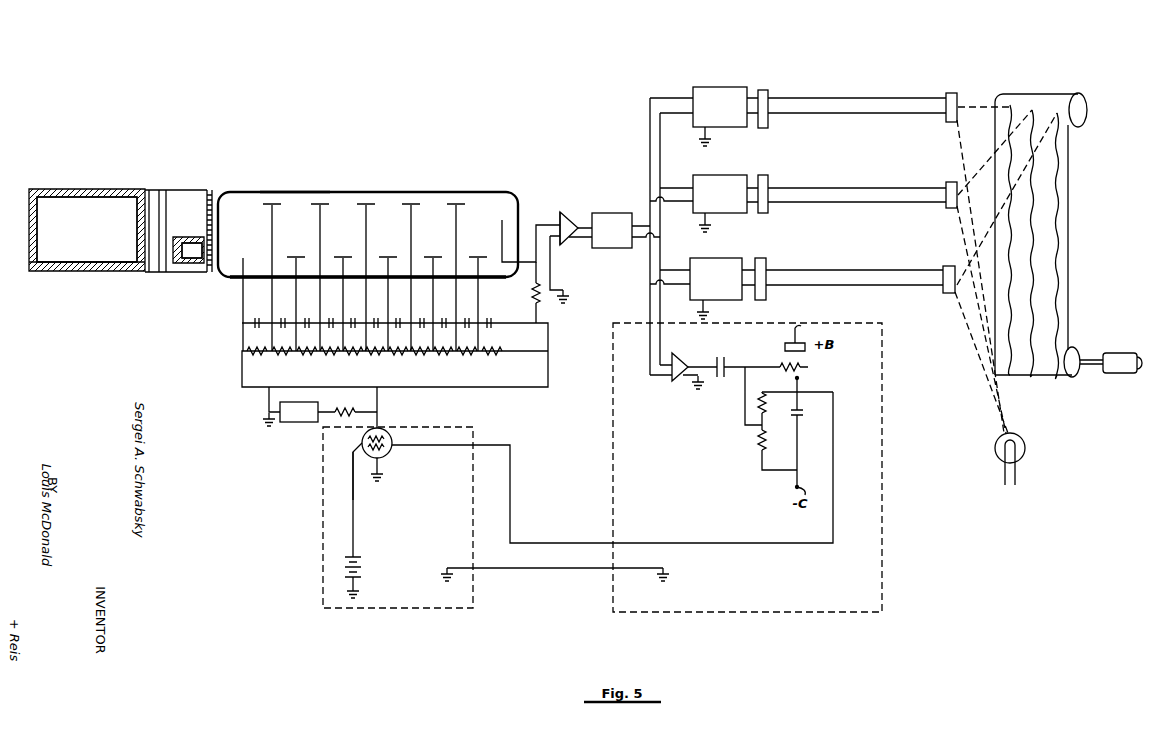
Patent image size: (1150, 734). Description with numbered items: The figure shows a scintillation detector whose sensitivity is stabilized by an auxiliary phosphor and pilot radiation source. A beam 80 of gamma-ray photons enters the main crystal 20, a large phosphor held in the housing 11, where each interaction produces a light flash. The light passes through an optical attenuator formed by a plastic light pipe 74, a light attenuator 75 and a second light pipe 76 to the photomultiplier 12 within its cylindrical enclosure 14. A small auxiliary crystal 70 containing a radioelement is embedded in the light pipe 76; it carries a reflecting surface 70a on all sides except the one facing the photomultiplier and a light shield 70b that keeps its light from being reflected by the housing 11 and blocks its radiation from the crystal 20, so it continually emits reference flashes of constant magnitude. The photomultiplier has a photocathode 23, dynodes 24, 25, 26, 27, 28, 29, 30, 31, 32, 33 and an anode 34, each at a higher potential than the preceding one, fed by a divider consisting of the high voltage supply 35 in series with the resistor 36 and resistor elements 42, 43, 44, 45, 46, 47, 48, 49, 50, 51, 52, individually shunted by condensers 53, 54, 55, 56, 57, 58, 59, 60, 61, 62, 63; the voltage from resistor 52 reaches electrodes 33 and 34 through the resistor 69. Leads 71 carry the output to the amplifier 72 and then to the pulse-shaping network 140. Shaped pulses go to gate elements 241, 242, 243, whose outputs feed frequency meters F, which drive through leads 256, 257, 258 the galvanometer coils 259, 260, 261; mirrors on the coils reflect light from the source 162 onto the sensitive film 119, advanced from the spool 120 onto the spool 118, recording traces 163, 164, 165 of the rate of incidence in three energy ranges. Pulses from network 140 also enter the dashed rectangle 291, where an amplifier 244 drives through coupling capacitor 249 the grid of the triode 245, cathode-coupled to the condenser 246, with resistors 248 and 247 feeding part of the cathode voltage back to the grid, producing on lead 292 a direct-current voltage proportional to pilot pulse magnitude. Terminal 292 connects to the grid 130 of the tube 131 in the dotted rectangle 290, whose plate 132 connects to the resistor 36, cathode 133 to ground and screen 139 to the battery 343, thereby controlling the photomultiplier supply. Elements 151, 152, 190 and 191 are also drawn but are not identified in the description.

The beam of incoming particles 80 is at (52, 250).
The crystal 20 is at (87, 229).
The housing 11 is at (117, 265).
The plastic light pipe 74 is at (152, 190).
The light attenuator 75 is at (163, 212).
The light pipe 76 is at (188, 210).
The auxiliary crystal 70 is at (198, 242).
The reflecting surface 70a is at (200, 260).
The light shield 70b is at (162, 262).
The cylindrical enclosure 14 is at (266, 174).
The photomultiplier 12 is at (295, 203).
The photosensitive cathode 23 is at (222, 238).
The dynode 24 is at (272, 270).
The dynode 25 is at (296, 296).
The dynode 26 is at (320, 270).
The dynode 27 is at (343, 296).
The dynode 28 is at (366, 270).
The dynode 29 is at (388, 296).
The dynode 30 is at (411, 270).
The dynode 31 is at (433, 296).
The dynode 32 is at (456, 270).
The dynode 33 is at (478, 296).
The anode 34 is at (502, 220).
The resistor element 42 is at (256, 360).
The resistor element 43 is at (282, 360).
The resistor element 44 is at (307, 360).
The resistor element 45 is at (330, 360).
The resistor element 46 is at (353, 360).
The resistor element 47 is at (375, 360).
The resistor element 48 is at (398, 360).
The resistor element 49 is at (420, 360).
The resistor element 50 is at (443, 360).
The resistor element 51 is at (467, 360).
The resistor element 52 is at (491, 360).
The condenser 53 is at (257, 315).
The condenser 54 is at (283, 315).
The condenser 55 is at (307, 315).
The condenser 56 is at (331, 315).
The condenser 57 is at (353, 315).
The condenser 58 is at (376, 315).
The condenser 59 is at (398, 315).
The condenser 60 is at (422, 315).
The condenser 61 is at (444, 315).
The condenser 62 is at (467, 315).
The condenser 63 is at (489, 315).
The resistor 69 is at (532, 302).
The leads 71 is at (555, 222).
The amplifier 72 is at (568, 242).
The pulse-shaping network 140 is at (605, 212).
The ground connection 151 is at (269, 412).
The high voltage supply 35 is at (295, 422).
The resistor 36 is at (352, 412).
The junction 152 is at (377, 412).
The grid 130 is at (386, 451).
The tube 131 is at (392, 441).
The plate 132 is at (381, 434).
The screen 139 is at (364, 442).
The cathode 133 is at (358, 455).
The battery 343 is at (359, 578).
The dotted rectangle 290 is at (324, 503).
The dashed rectangle 291 is at (884, 531).
The lead 292 is at (513, 542).
The gate element 243 is at (700, 103).
The gate element 242 is at (696, 177).
The gate element 241 is at (702, 264).
The frequency meters F is at (763, 94).
The lead 258 is at (826, 107).
The lead 257 is at (825, 197).
The lead 256 is at (822, 282).
The galvanometer coil 261 is at (952, 93).
The galvanometer coil 260 is at (952, 182).
The galvanometer coil 259 is at (950, 266).
The sensitive film 119 is at (1070, 262).
The spool 120 is at (1087, 110).
The spool 118 is at (1072, 349).
The shaft 190 is at (1084, 380).
The motor 191 is at (1122, 376).
The trace 163 is at (1057, 147).
The trace 164 is at (1032, 178).
The trace 165 is at (1010, 218).
The light source 162 is at (1017, 445).
The amplifier 244 is at (676, 378).
The coupling capacitor 249 is at (727, 341).
The triode 245 is at (805, 367).
The resistor 248 is at (762, 403).
The resistor 247 is at (760, 449).
The condenser 246 is at (797, 457).